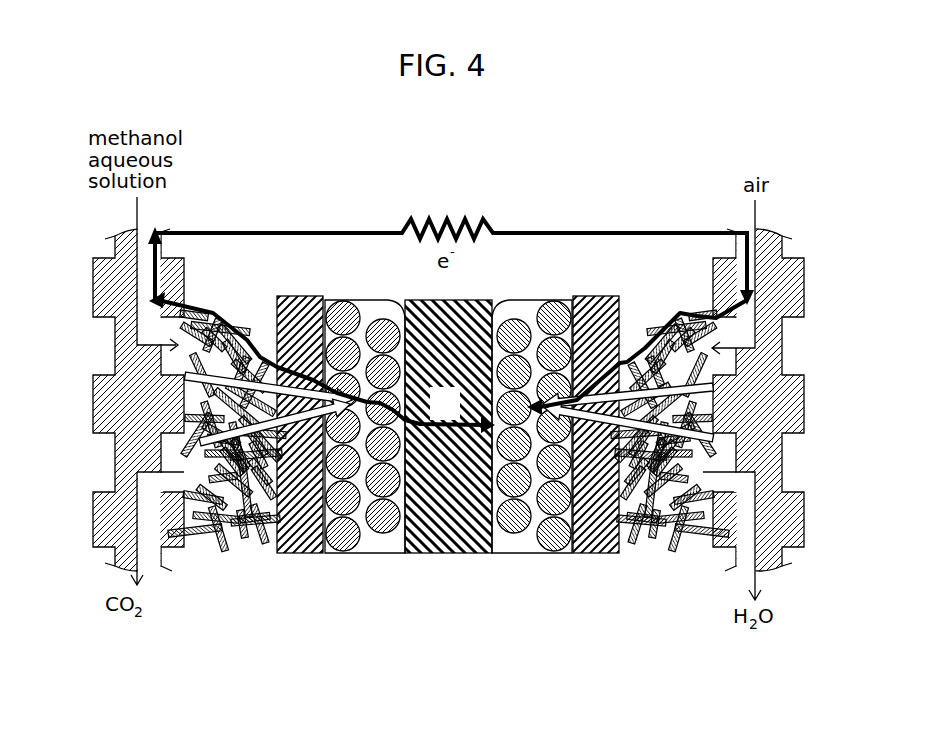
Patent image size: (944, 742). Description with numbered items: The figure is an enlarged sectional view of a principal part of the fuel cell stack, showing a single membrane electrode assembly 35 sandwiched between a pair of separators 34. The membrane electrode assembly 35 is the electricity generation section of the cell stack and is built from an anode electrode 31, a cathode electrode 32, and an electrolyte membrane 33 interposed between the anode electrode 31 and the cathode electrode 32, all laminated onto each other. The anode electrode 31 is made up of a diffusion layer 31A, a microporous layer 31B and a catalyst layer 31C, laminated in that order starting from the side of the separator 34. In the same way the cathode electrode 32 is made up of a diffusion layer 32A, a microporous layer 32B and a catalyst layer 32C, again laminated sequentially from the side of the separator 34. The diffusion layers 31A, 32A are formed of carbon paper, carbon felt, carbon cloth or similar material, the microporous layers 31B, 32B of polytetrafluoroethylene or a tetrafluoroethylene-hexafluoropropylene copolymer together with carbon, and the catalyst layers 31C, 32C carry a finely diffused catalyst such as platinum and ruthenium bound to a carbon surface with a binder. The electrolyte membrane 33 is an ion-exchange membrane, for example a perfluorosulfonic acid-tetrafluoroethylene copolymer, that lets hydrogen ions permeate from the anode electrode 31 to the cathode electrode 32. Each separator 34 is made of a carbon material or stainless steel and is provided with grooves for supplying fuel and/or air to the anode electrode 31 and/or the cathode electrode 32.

The anode electrode 31 is at (295, 393).
The diffusion layer 31A is at (232, 300).
The microporous layer (MPL) 31B is at (293, 295).
The catalyst layer 31C is at (345, 305).
The cathode electrode 32 is at (597, 387).
The diffusion layer 32A is at (652, 298).
The microporous layer (MPL) 32B is at (595, 297).
The catalyst layer 32C is at (543, 303).
The electrolyte membrane 33 is at (440, 555).
The separator 34 is at (93, 266).
The membrane electrode assembly (MEA) 35 is at (448, 421).